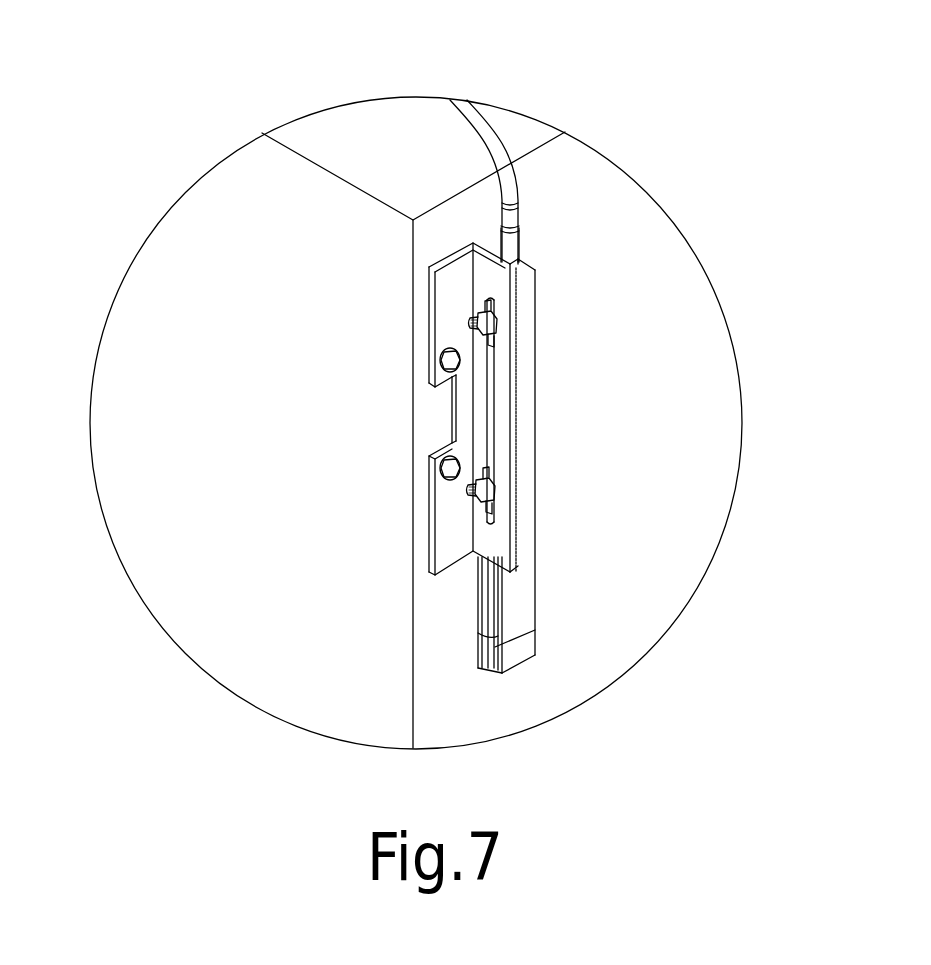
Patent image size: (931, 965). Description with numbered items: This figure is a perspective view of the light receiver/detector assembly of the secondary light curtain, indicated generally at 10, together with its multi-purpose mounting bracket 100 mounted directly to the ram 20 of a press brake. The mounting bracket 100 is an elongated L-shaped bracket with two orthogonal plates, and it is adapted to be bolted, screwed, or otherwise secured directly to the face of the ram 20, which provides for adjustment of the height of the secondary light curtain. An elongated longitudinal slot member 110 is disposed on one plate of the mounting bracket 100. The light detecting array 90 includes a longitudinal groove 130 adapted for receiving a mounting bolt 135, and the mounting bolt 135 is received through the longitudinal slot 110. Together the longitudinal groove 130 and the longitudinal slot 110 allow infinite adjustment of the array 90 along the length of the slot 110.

The monitoring system 10 is at (172, 131).
The ram 20 is at (597, 200).
The light detecting array 90 is at (528, 375).
The mounting bracket 100 is at (394, 304).
The longitudinal slot member 110 is at (470, 398).
The longitudinal groove 130 is at (493, 668).
The mounting bolt 135 is at (470, 322).